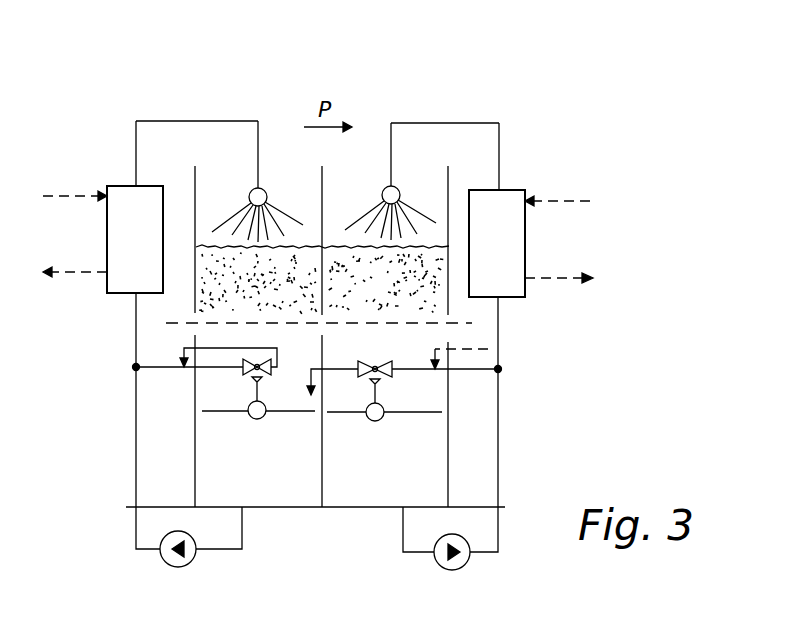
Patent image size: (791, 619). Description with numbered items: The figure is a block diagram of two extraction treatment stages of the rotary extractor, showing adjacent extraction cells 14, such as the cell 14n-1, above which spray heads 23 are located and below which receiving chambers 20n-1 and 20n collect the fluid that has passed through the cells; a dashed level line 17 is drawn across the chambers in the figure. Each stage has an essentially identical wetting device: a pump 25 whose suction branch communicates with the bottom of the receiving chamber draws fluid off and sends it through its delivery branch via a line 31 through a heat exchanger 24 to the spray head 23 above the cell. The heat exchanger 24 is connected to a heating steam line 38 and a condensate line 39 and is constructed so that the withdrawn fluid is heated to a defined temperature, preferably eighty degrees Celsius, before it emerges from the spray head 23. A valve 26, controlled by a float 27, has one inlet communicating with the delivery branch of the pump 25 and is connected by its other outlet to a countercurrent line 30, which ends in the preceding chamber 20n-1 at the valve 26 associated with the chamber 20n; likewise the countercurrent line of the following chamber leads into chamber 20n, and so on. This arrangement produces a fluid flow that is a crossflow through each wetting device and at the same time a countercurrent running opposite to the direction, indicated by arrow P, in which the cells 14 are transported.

The cells 14 is at (347, 190).
The extraction cell 14n-1 is at (300, 192).
The liquid level 17 is at (462, 321).
The receiving chamber 20n-1 is at (292, 404).
The receiving chamber 20n is at (345, 405).
The spray head 23 is at (251, 191).
The heat exchanger 24 is at (150, 242).
The pump 25 is at (175, 567).
The valve 26 is at (272, 375).
The float 27 is at (251, 403).
The countercurrent line 30 is at (210, 348).
The line 31 is at (135, 335).
The heating steam line 38 is at (85, 196).
The condensate line 39 is at (75, 271).